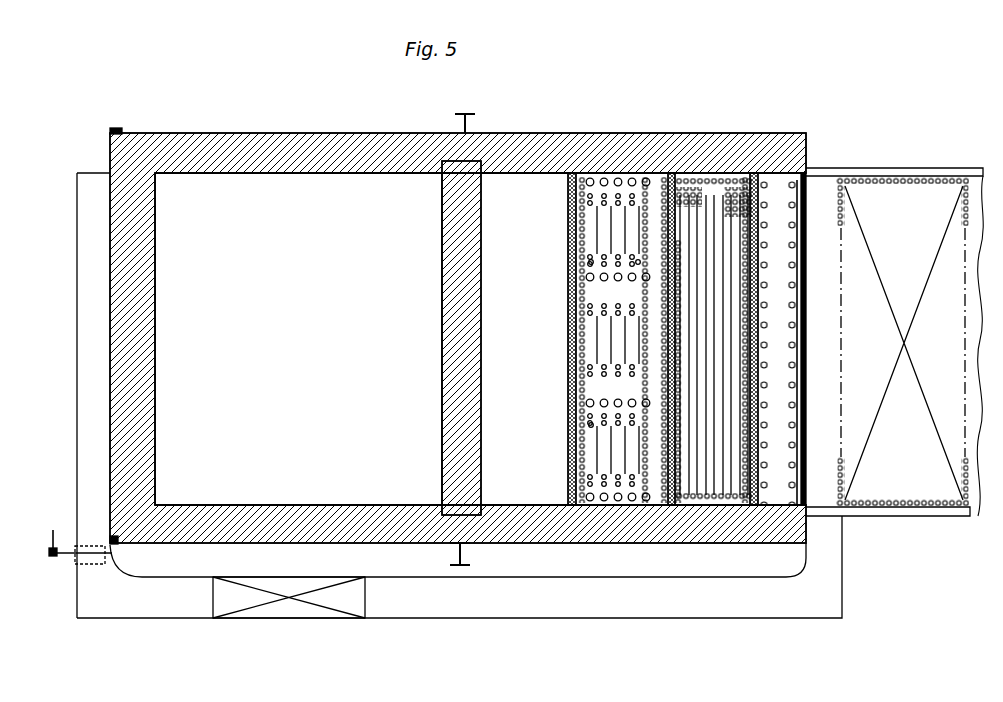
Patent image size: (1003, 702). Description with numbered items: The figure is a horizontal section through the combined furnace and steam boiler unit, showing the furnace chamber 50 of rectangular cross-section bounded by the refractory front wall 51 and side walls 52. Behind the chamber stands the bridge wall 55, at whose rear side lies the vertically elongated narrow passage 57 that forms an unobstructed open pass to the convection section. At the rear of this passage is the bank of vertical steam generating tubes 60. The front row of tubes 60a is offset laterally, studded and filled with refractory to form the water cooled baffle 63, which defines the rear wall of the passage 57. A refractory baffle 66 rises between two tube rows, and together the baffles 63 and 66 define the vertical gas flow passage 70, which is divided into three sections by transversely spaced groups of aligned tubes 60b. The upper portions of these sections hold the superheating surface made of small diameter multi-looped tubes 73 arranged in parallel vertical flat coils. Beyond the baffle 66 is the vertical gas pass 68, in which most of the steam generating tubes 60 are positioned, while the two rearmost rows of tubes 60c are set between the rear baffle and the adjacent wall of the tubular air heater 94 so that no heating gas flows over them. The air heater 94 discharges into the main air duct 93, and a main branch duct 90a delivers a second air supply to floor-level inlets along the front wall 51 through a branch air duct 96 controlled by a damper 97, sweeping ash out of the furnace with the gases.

The furnace chamber 50 is at (310, 351).
The front wall 51 is at (158, 357).
The side walls 52 is at (290, 175).
The bridge wall 55 is at (444, 322).
The passage 57 is at (537, 351).
The steam generating tubes 60 is at (742, 448).
The front row of tubes 60a is at (569, 267).
The steam generating tubes 60b is at (588, 404).
The rearmost rows of tubes 60c is at (795, 352).
The water cooled baffle 63 is at (568, 365).
The refractory baffle 66 is at (674, 302).
The gas pass 68 is at (722, 351).
The gas flow passage 70 is at (628, 351).
The multi-looped tubes 73 is at (637, 252).
The main branch duct 90a is at (300, 602).
The main air duct 93 is at (523, 607).
The tubular air heater 94 is at (918, 256).
The branch air duct 96 is at (82, 390).
The damper 97 is at (87, 562).